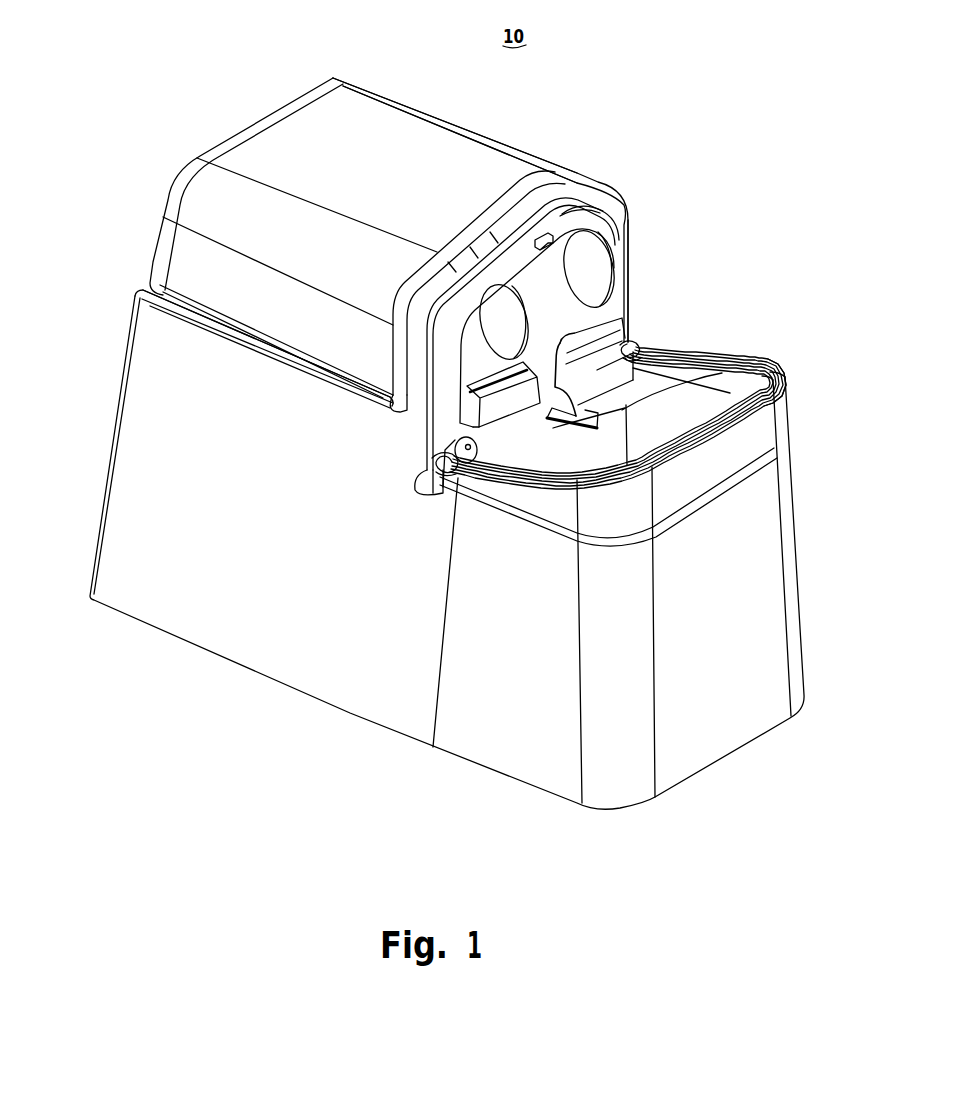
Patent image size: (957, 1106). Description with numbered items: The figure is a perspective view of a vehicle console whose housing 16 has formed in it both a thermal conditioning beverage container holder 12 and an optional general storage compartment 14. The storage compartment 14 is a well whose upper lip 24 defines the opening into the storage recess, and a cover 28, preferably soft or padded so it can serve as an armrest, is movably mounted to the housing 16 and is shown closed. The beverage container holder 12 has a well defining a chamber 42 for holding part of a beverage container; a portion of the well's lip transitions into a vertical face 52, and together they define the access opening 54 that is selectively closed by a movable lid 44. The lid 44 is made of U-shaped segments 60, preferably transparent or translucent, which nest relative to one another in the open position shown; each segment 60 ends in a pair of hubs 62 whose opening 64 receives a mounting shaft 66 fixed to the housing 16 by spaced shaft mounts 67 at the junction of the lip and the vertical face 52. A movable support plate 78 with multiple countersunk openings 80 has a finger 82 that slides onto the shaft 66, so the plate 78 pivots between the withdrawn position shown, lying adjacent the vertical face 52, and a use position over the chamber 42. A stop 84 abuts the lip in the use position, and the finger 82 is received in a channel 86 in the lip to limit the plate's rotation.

The thermal conditioning beverage container holder 12 is at (701, 404).
The general storage compartment 14 is at (172, 162).
The housing 16 is at (804, 541).
The upper lip 24 is at (148, 291).
The cover 28 is at (344, 73).
The chamber 42 is at (728, 356).
The movable lid 44 is at (796, 398).
The vertical face 52 is at (618, 206).
The access opening 54 is at (645, 275).
The U-shaped segments 60 is at (772, 361).
The hubs 62 is at (455, 482).
The opening 64 is at (440, 460).
The mounting shaft 66 is at (628, 347).
The shaft mounts 67 is at (640, 340).
The movable support plate 78 is at (601, 204).
The openings 80 is at (598, 266).
The finger 82 is at (597, 367).
The stop 84 is at (541, 232).
The channel 86 is at (572, 478).